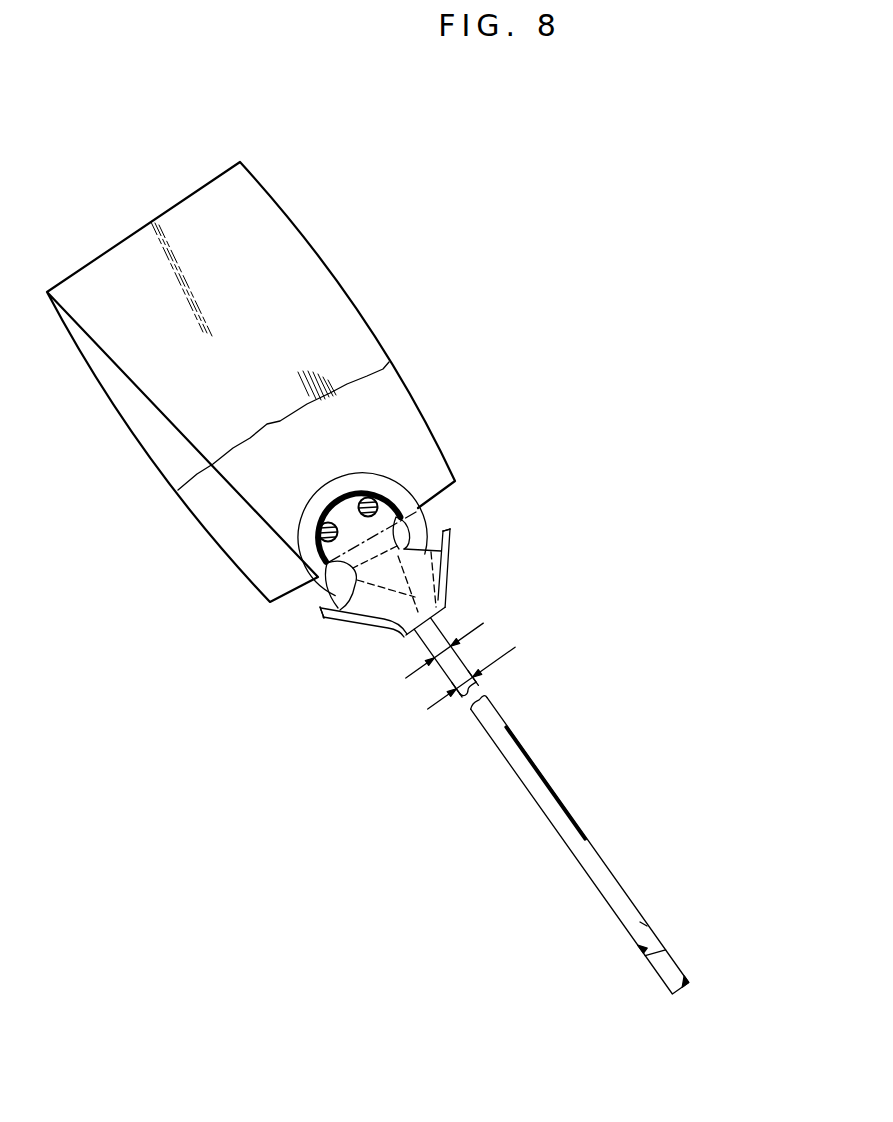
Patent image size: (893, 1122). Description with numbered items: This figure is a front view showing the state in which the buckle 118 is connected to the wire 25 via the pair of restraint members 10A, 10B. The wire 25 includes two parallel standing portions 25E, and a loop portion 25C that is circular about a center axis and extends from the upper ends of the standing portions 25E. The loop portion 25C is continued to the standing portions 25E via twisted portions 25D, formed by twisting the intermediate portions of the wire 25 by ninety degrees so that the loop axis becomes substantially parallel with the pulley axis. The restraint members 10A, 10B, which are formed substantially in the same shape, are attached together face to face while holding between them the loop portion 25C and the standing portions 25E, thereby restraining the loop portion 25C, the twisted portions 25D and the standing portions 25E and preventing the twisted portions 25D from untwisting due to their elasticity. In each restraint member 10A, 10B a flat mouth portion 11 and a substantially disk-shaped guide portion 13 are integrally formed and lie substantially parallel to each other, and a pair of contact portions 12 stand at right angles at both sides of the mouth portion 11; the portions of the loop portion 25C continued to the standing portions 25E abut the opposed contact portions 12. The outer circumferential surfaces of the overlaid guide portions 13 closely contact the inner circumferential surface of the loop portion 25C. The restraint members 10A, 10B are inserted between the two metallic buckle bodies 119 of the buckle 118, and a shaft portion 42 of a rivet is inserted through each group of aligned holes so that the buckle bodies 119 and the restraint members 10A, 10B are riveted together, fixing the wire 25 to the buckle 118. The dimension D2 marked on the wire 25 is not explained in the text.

The buckle 118 is at (317, 228).
The buckle body 119 is at (358, 342).
The guide portion 13 is at (340, 549).
The shaft portion 42 is at (370, 497).
The loop portion 25C is at (415, 528).
The mouth portion 11 is at (422, 638).
The restraint member 10A is at (343, 623).
The restraint member 10B is at (448, 580).
The contact portion 12 is at (437, 565).
The twisted portion 25D is at (440, 619).
The tube diameter D2 is at (464, 686).
The wire 25 is at (618, 855).
The standing portion 25E is at (645, 925).